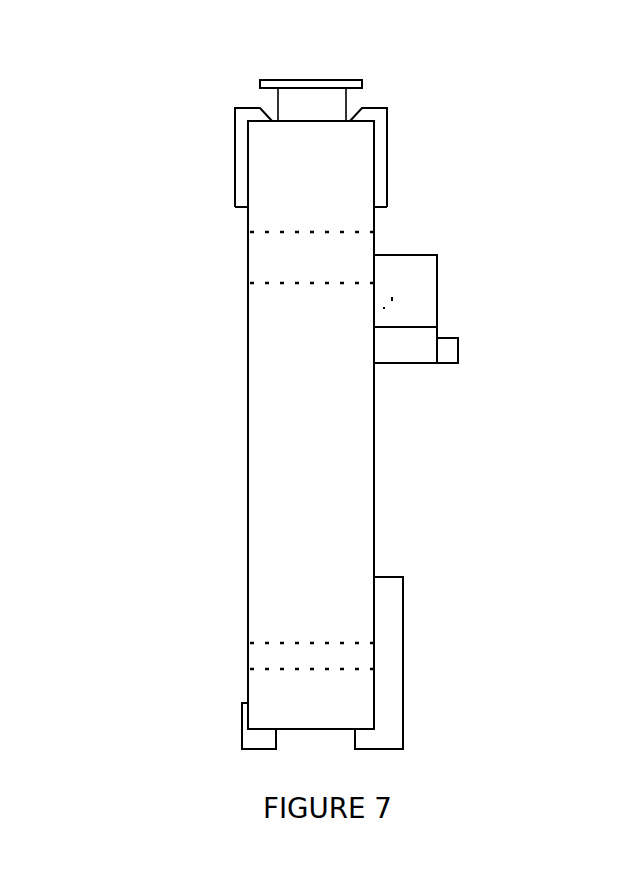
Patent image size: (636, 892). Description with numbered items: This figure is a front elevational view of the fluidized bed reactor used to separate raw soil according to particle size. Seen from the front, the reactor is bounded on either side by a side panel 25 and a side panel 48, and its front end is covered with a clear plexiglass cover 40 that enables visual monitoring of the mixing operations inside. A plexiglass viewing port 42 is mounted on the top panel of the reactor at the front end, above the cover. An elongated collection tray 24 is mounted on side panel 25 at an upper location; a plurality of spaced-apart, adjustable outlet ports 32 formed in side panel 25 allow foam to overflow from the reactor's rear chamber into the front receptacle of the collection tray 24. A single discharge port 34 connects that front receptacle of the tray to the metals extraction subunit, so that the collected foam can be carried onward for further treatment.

The clear plexiglass cover 40 is at (333, 431).
The side panel 48 is at (247, 443).
The side panel 25 is at (374, 473).
The plexiglass viewing port 42 is at (361, 82).
The collection tray 24 is at (444, 297).
The adjustable outlet ports 32 is at (390, 286).
The discharge port 34 is at (458, 347).